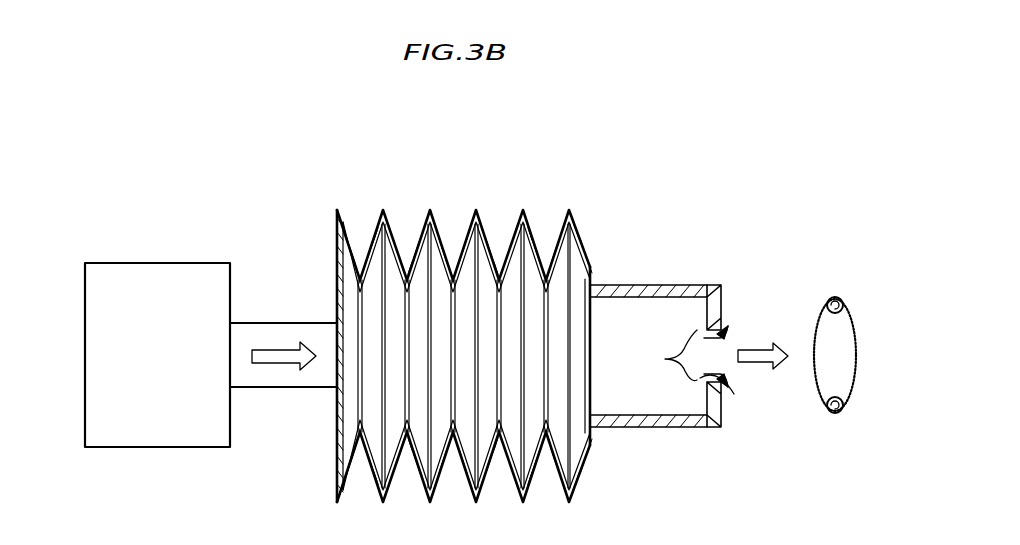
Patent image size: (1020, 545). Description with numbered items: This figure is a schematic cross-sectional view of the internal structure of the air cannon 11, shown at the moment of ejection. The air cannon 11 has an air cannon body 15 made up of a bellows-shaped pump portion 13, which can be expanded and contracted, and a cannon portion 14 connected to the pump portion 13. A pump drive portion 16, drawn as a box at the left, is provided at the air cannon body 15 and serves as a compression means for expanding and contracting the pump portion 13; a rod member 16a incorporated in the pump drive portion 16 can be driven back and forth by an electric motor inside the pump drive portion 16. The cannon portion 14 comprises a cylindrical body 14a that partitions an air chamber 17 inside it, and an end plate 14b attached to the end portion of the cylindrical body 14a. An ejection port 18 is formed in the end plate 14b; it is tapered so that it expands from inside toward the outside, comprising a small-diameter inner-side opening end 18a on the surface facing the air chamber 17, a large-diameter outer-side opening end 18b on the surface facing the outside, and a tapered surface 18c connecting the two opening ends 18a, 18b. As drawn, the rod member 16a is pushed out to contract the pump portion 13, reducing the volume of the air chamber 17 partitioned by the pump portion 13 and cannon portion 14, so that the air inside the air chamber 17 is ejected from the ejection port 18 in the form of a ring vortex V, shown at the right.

The air cannon 11 is at (547, 162).
The bellows-shaped pump portion 13 is at (446, 226).
The air cannon body 15 is at (587, 222).
The cannon portion 14 is at (662, 340).
The cylindrical body 14a is at (641, 283).
The end plate 14b is at (718, 431).
The pump drive portion 16 is at (167, 250).
The rod member 16a is at (278, 332).
The air chamber 17 is at (645, 412).
The ejection port 18 is at (712, 357).
The inner-side opening end 18a is at (665, 359).
The outer-side opening end 18b is at (720, 331).
The tapered surface 18c is at (730, 392).
The ring vortex V is at (857, 352).